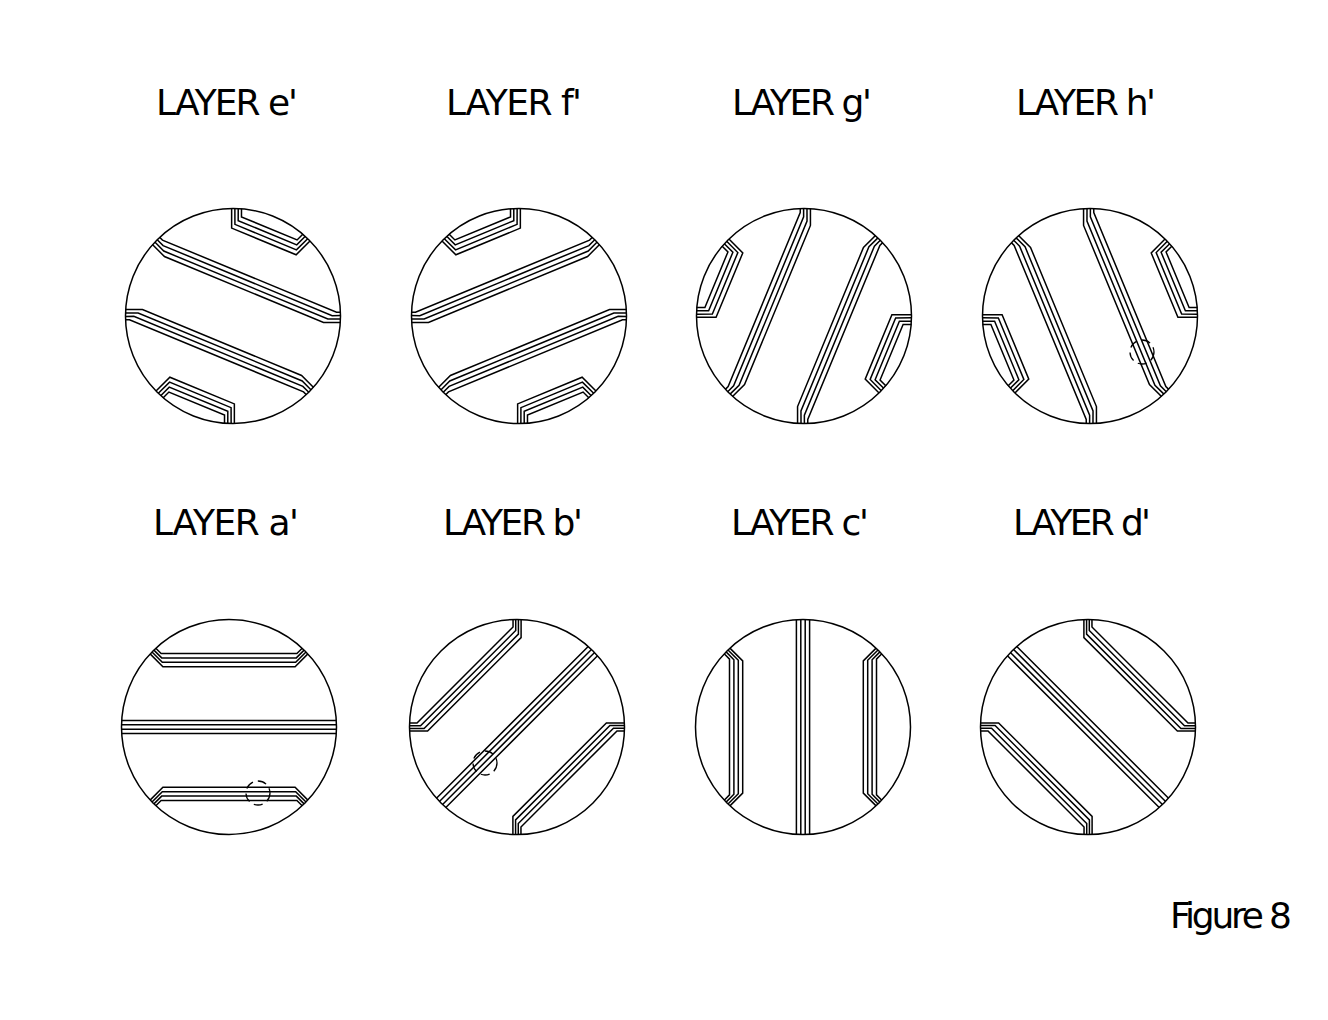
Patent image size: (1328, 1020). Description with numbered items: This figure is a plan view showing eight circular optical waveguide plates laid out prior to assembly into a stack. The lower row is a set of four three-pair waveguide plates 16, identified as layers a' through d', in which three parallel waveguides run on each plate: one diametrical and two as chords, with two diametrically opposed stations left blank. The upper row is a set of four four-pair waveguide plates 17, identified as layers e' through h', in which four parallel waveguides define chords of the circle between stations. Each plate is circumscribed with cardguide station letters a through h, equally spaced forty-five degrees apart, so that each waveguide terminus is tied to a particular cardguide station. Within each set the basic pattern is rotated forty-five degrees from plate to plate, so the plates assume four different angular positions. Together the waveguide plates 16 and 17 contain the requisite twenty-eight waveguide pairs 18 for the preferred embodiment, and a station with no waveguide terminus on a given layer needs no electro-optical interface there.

The three-pair waveguide plates 16 is at (1135, 631).
The four-pair waveguide plates 17 is at (1136, 216).
The waveguide pairs 18 is at (1218, 368).